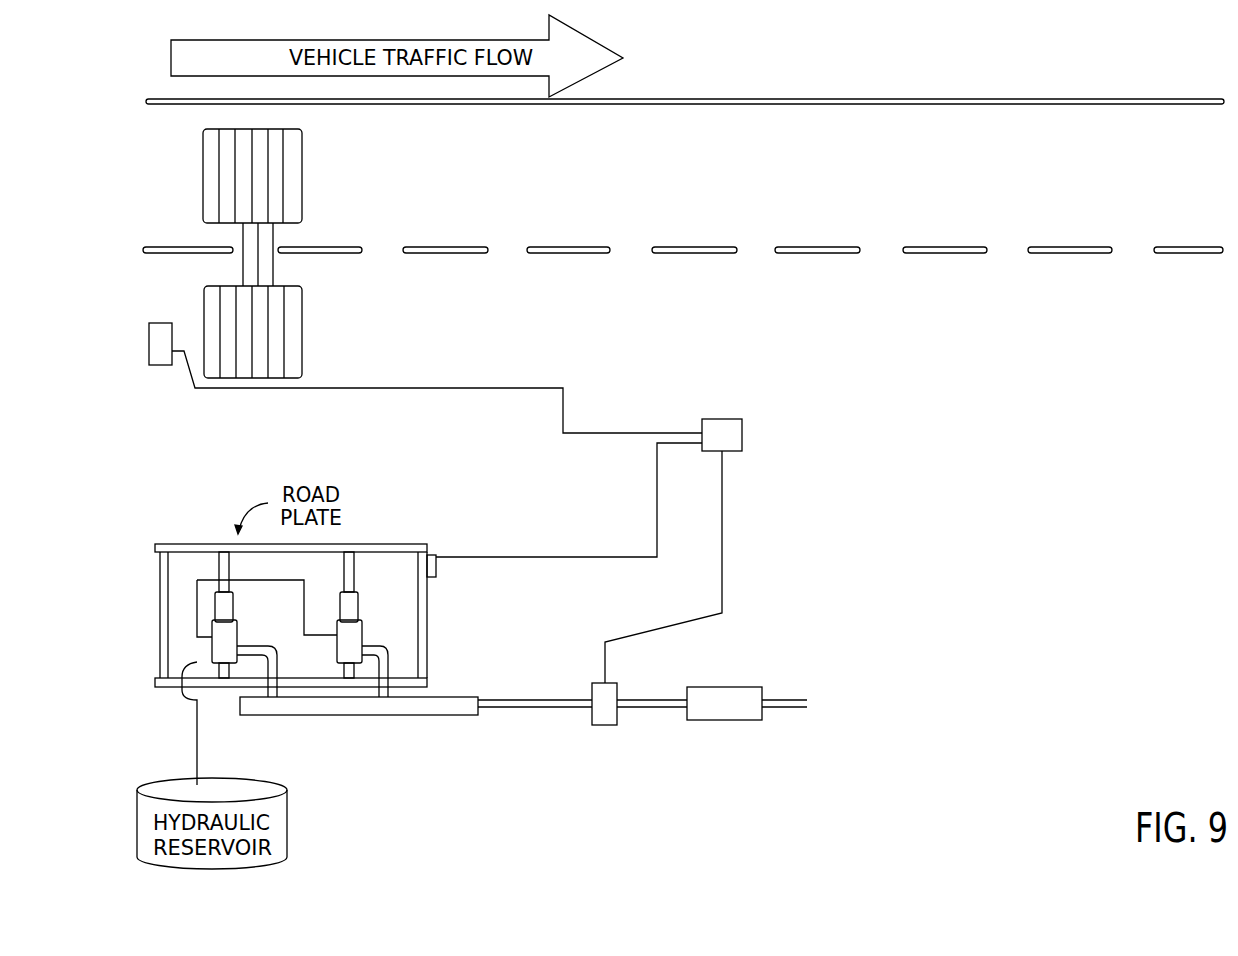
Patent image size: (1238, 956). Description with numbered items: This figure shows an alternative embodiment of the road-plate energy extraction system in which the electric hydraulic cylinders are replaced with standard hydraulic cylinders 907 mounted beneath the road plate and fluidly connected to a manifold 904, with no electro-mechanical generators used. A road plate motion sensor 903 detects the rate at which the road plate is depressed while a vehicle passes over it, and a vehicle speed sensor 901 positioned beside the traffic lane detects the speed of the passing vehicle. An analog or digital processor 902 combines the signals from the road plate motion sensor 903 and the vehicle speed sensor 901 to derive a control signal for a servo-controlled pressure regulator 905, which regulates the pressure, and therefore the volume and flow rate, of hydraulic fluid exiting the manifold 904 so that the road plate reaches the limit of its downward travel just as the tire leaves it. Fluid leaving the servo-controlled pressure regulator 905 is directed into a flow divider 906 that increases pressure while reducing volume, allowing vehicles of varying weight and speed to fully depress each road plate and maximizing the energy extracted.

The vehicle speed sensor 901 is at (160, 372).
The processor 902 is at (733, 414).
The road plate motion sensor 903 is at (433, 548).
The manifold 904 is at (309, 723).
The servo-controlled pressure regulator 905 is at (604, 736).
The flow divider 906 is at (731, 680).
The standard hydraulic cylinders 907 is at (373, 604).